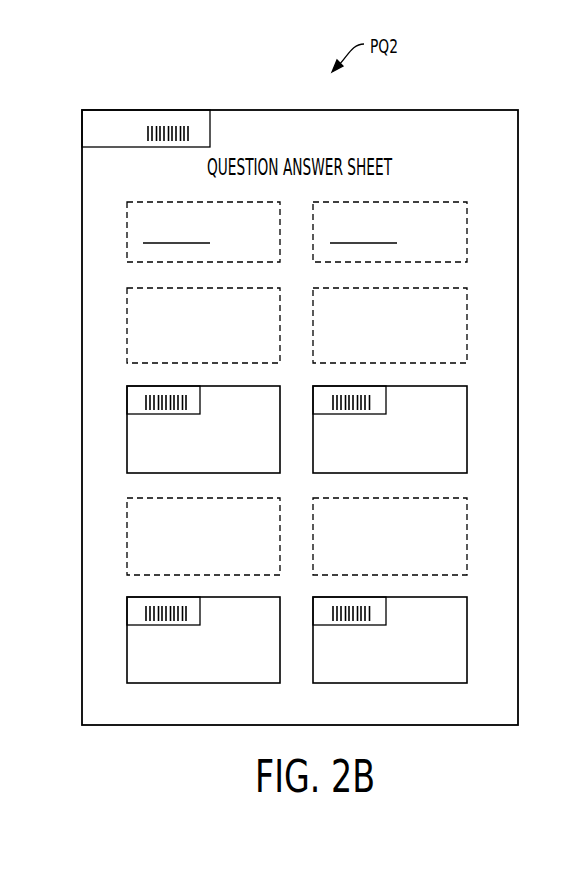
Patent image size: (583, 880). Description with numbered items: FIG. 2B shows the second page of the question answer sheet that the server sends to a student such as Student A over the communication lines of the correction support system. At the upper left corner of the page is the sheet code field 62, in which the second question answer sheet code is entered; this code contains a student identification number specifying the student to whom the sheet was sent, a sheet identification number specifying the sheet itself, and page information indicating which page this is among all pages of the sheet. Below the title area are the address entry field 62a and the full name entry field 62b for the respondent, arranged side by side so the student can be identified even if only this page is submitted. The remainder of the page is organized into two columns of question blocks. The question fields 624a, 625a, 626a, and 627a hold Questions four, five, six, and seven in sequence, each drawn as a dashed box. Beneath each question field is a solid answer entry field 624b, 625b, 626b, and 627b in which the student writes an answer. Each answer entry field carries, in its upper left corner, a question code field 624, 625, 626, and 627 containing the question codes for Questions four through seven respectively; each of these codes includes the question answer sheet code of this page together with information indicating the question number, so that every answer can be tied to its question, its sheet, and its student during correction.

The sheet code field 62 is at (102, 124).
The address entry field 62a is at (125, 230).
The full name entry field 62b is at (469, 229).
The question field 624a is at (125, 325).
The question code field 624 is at (127, 400).
The answer entry field 624b is at (127, 435).
The question field 625a is at (469, 325).
The question code field 625 is at (341, 415).
The answer entry field 625b is at (467, 435).
The question field 626a is at (125, 535).
The question code field 626 is at (127, 612).
The answer entry field 626b is at (127, 647).
The question field 627a is at (469, 535).
The question code field 627 is at (341, 626).
The answer entry field 627b is at (467, 647).